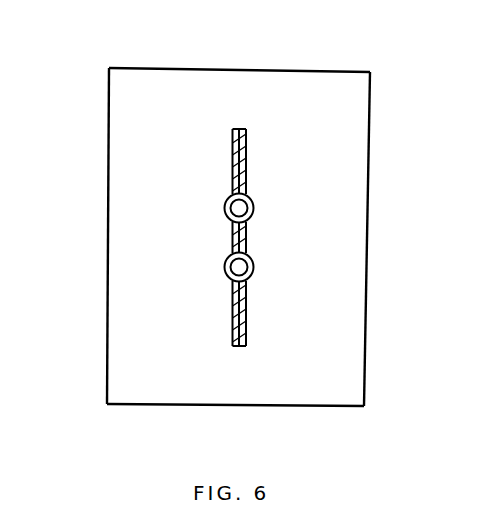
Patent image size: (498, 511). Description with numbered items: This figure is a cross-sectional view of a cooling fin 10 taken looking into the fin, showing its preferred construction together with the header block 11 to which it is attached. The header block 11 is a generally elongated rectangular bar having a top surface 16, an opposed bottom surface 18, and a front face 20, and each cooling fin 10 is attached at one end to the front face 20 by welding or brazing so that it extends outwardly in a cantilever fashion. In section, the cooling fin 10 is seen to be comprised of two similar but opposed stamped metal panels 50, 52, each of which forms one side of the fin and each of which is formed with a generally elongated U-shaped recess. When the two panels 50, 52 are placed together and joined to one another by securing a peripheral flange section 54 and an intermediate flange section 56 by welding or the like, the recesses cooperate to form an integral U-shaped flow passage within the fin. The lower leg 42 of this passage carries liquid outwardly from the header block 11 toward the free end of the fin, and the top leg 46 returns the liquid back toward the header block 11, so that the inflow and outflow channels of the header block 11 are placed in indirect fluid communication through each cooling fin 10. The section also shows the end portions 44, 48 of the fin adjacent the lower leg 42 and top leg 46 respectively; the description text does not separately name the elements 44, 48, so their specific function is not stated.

The cooling fin 10 is at (243, 238).
The header block 11 is at (380, 145).
The top surface 16 is at (190, 68).
The bottom surface 18 is at (177, 405).
The front face 20 is at (110, 280).
The lower leg 42 is at (245, 275).
The lower end of strip 44 is at (242, 348).
The top leg 46 is at (238, 211).
The upper end of strip 48 is at (243, 128).
The stamped metal panel 50 is at (252, 248).
The stamped metal panel 52 is at (228, 242).
The peripheral flange section 54 is at (247, 153).
The intermediate flange section 56 is at (247, 233).